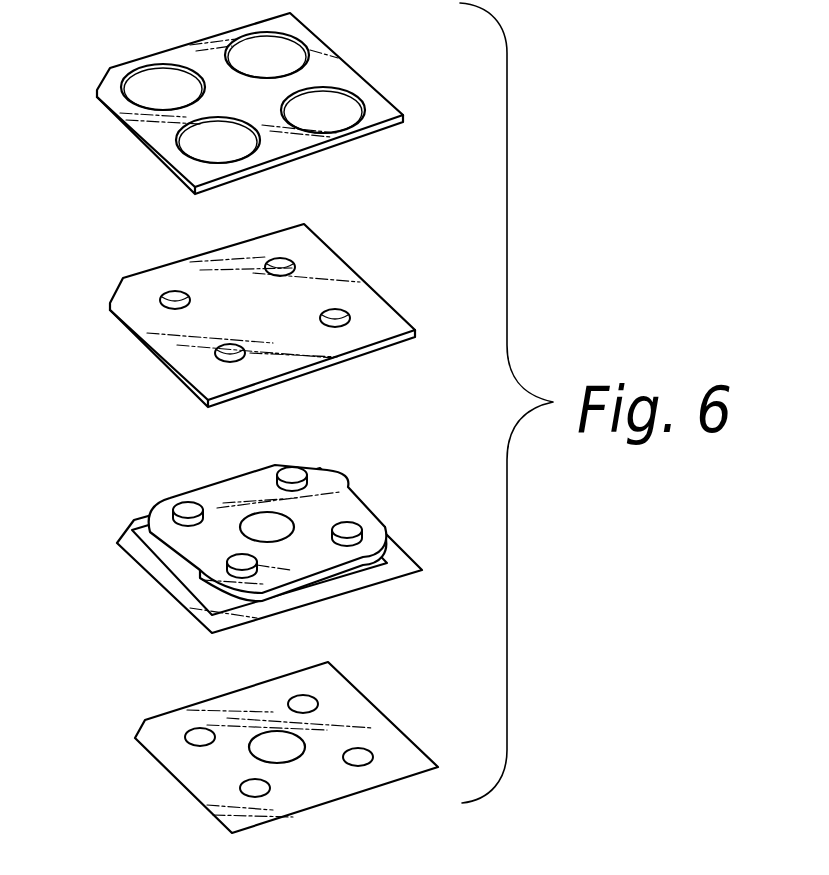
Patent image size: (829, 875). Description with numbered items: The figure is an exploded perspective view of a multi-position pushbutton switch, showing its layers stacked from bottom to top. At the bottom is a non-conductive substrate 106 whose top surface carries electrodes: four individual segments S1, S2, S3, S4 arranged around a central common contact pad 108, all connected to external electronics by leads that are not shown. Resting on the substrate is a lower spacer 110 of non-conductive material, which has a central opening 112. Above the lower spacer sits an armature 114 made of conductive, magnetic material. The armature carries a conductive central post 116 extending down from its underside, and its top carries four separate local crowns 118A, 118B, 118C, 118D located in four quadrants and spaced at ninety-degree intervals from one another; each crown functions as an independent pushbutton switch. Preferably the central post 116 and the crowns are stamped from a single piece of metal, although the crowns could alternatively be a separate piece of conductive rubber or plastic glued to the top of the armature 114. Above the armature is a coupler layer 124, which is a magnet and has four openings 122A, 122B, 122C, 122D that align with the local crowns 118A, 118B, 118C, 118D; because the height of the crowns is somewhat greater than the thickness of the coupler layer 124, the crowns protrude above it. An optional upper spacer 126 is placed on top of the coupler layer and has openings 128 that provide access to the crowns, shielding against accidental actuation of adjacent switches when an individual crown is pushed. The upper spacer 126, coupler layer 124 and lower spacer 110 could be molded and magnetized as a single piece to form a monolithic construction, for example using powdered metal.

The non-conductive substrate 106 is at (172, 772).
The central common contact pad 108 is at (287, 745).
The lower spacer 110 is at (153, 578).
The central opening 112 is at (207, 588).
The armature 114 is at (348, 487).
The central post 116 is at (267, 522).
The local crown 118A is at (292, 472).
The local crown 118B is at (347, 527).
The local crown 118C is at (238, 560).
The local crown 118D is at (184, 507).
The opening 122A is at (293, 265).
The opening 122B is at (348, 322).
The opening 122C is at (220, 355).
The opening 122D is at (178, 298).
The coupler layer 124 is at (372, 307).
The upper spacer 126 is at (333, 70).
The openings 128 is at (278, 46).
The electrode segment S1 is at (303, 703).
The electrode segment S2 is at (357, 753).
The electrode segment S3 is at (257, 788).
The electrode segment S4 is at (198, 735).